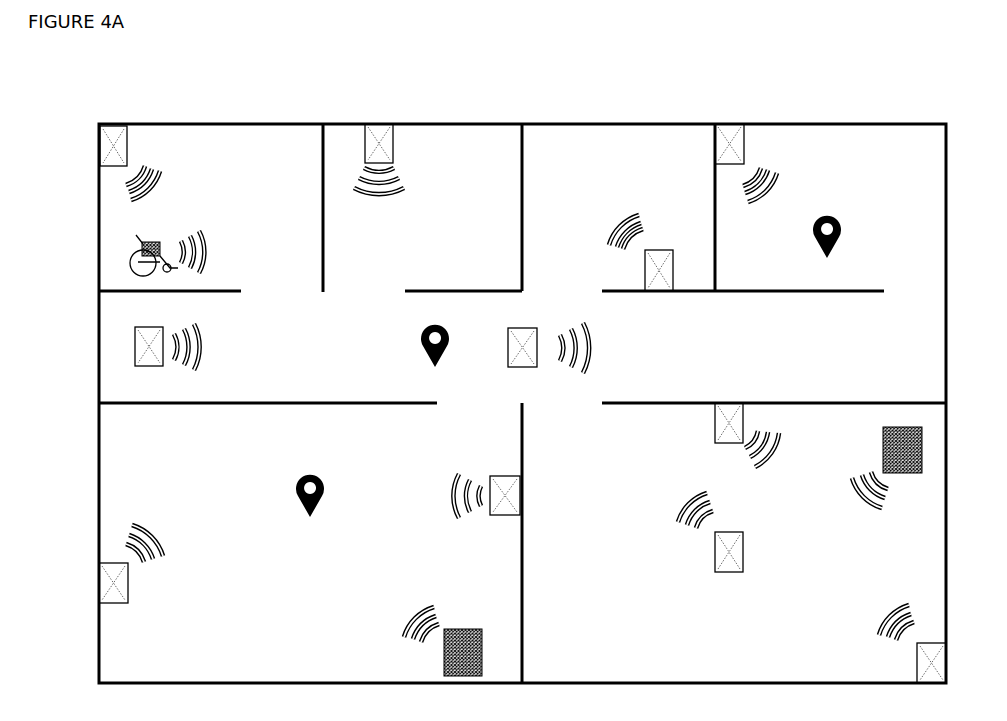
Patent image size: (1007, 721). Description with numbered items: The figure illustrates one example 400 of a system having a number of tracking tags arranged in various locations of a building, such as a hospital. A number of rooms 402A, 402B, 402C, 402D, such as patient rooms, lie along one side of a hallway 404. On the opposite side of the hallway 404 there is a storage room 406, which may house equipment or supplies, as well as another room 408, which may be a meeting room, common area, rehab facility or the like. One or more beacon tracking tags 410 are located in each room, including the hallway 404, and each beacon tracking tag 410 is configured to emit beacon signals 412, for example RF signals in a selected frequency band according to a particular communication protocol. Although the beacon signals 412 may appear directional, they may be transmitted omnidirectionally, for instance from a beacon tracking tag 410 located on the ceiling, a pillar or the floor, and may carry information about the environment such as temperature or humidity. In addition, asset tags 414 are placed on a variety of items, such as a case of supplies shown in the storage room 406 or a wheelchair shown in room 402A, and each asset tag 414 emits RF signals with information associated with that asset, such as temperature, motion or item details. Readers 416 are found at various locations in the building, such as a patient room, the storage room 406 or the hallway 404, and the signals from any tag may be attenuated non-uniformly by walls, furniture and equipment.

The example system 400 is at (95, 61).
The room 402A is at (302, 155).
The room 402B is at (499, 155).
The room 402C is at (694, 155).
The room 402D is at (918, 155).
The hallway 404 is at (919, 351).
The storage room 406 is at (156, 671).
The room 408 is at (577, 671).
The beacon tracking tag 410 is at (380, 124).
The beacon signals 412 is at (152, 535).
The asset tag 414 is at (129, 258).
The reader 416 is at (827, 215).